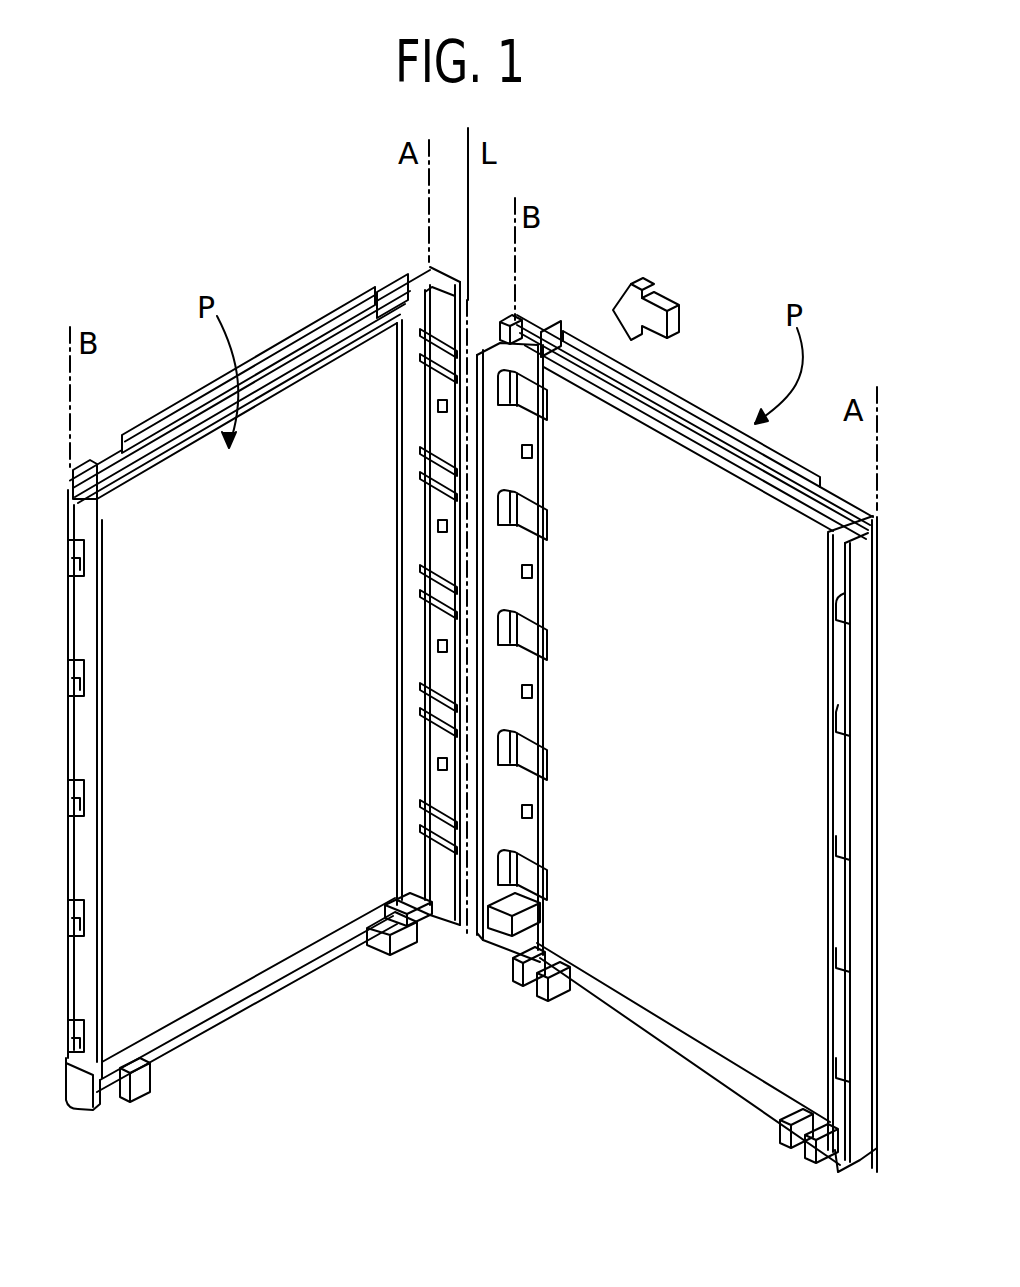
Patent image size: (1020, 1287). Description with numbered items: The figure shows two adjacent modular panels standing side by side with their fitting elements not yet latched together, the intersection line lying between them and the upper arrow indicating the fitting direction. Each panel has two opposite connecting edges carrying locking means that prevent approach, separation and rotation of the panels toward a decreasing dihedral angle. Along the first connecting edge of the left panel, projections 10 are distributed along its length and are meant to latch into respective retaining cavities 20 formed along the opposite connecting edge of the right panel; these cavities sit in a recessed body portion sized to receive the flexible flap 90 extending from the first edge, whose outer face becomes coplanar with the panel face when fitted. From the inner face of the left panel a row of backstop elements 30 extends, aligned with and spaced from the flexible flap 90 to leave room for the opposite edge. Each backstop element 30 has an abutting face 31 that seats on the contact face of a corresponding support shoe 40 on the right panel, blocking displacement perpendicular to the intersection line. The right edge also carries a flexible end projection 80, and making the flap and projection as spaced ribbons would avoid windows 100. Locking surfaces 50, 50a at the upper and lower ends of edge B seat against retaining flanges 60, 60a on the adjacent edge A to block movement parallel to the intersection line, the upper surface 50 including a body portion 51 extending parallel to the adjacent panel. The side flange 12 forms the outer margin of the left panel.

The projections 10 is at (440, 405).
The side flange 12 is at (88, 712).
The retaining cavities 20 is at (537, 452).
The backstop elements 30 is at (420, 330).
The abutting face 31 is at (847, 612).
The support shoes 40 is at (538, 397).
The upper locking surfaces 50 is at (530, 317).
The lower locking surface 50a is at (513, 950).
The body portion 51 is at (507, 320).
The retaining flange 60 is at (452, 272).
The retaining flange 60a is at (427, 912).
The flexible end projection 80 is at (527, 590).
The flexible flap 90 is at (440, 548).
The windows 100 is at (550, 747).